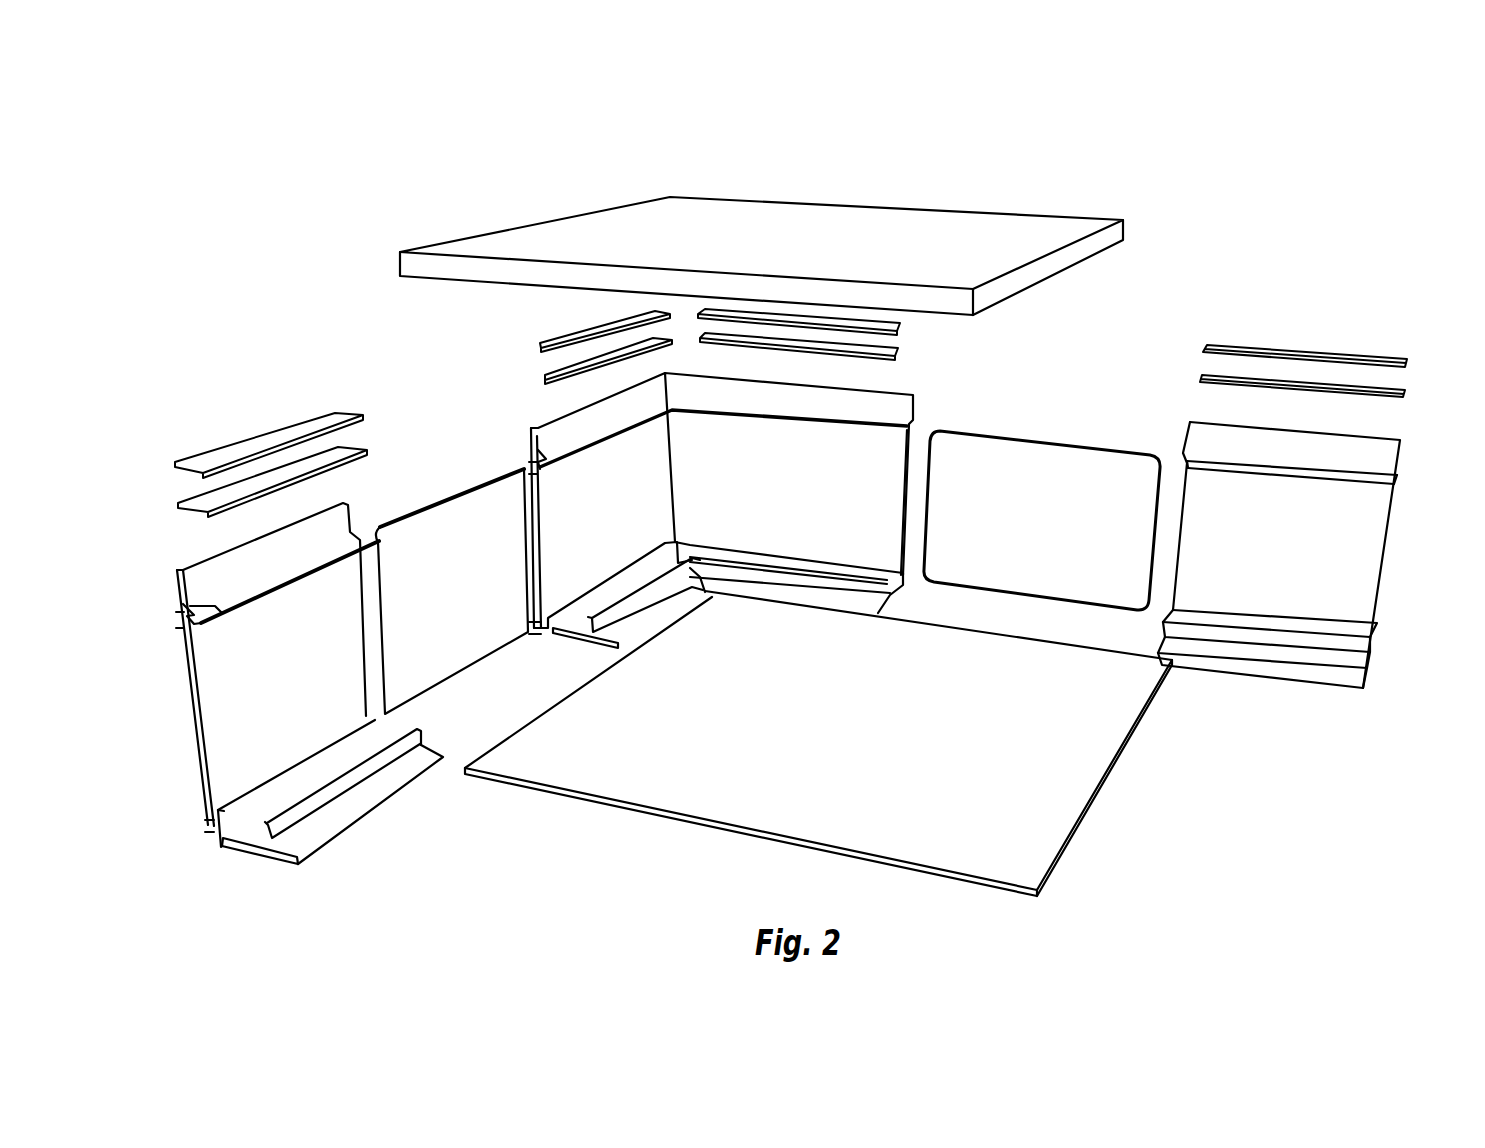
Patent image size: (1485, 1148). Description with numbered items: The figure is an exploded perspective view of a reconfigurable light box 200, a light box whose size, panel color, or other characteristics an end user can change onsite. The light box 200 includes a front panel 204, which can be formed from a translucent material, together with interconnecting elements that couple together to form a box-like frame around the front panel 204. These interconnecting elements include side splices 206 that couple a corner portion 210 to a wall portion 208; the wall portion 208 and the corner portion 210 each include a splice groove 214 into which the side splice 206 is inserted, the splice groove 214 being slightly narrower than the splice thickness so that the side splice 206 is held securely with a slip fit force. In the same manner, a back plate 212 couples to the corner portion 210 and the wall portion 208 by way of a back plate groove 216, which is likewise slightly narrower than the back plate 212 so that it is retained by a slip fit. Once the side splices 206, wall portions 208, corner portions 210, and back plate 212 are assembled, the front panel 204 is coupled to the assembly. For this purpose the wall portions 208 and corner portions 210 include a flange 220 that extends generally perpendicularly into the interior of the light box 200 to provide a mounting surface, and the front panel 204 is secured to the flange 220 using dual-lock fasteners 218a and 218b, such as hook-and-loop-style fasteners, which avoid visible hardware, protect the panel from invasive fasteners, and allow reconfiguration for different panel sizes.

The reconfigurable light box 200 is at (436, 98).
The front panel 204 is at (1025, 232).
The side splice 206 is at (420, 560).
The wall portion 208 is at (220, 717).
The corner portion 210 is at (577, 540).
The back plate 212 is at (1025, 847).
The splice groove 214 is at (526, 467).
The back plate groove 216 is at (256, 852).
The dual-lock fastener 218a is at (205, 455).
The dual-lock fastener 218b is at (205, 505).
The flange 220 is at (243, 590).